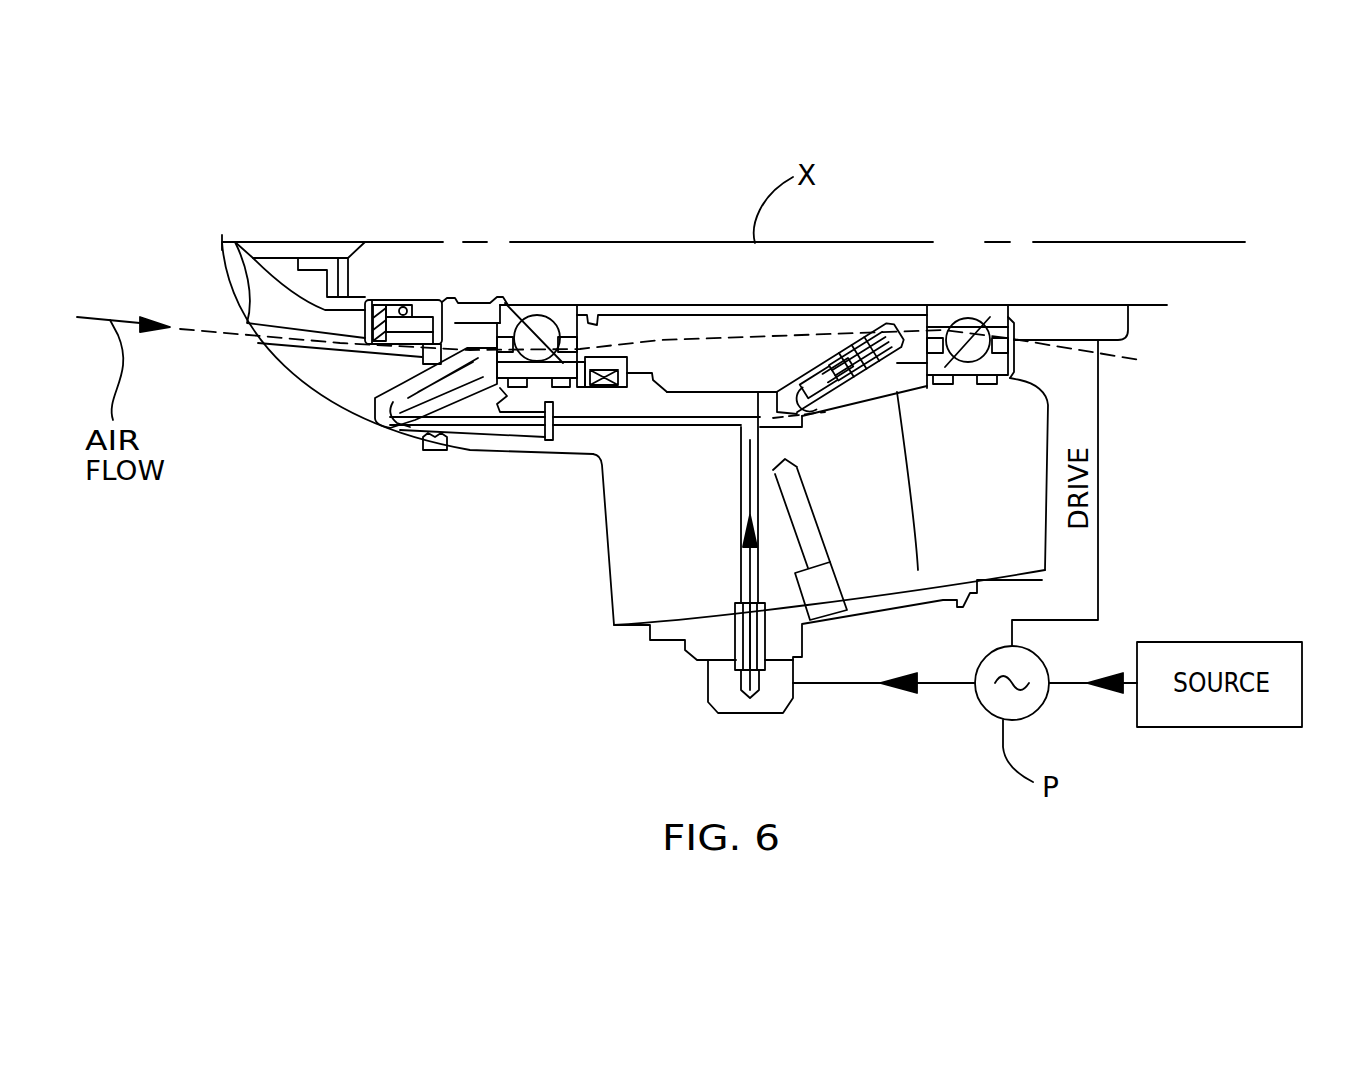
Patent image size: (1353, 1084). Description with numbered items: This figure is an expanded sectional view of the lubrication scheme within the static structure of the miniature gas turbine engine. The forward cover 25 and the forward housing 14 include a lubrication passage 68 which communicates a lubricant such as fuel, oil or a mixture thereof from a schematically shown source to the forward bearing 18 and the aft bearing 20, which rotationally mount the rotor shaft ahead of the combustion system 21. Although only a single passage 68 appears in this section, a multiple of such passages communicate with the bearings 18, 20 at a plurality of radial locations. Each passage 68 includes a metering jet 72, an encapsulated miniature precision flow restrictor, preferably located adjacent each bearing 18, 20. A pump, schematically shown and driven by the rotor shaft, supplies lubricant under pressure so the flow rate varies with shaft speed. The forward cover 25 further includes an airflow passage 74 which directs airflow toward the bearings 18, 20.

The forward housing 14 is at (573, 443).
The forward bearing 18 is at (548, 303).
The aft bearing 20 is at (958, 303).
The combustion system 21 is at (1183, 380).
The forward cover 25 is at (493, 443).
The lubrication passage 68 is at (738, 528).
The metering jet 72 is at (387, 420).
The airflow passage 74 is at (243, 277).